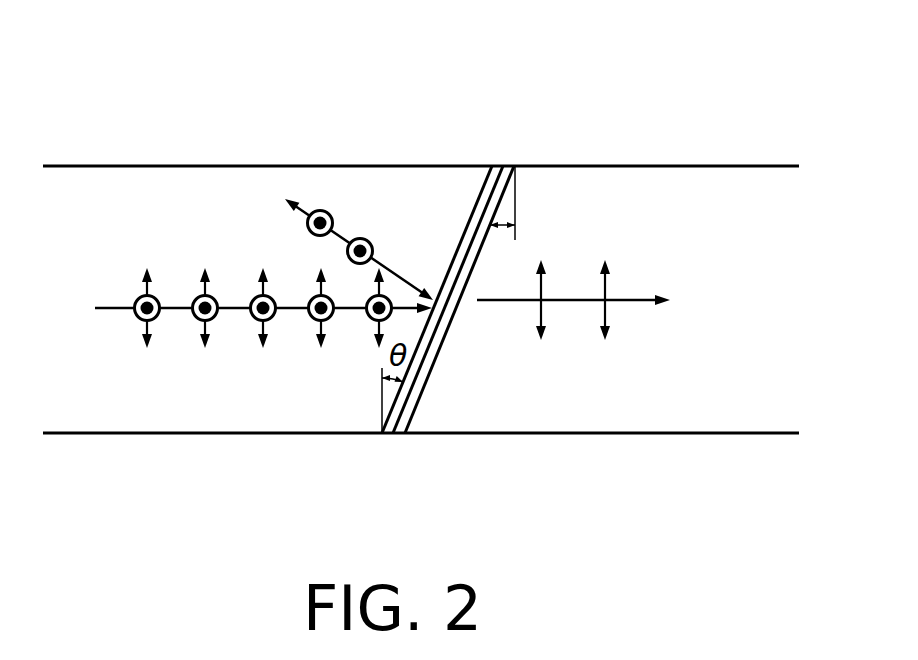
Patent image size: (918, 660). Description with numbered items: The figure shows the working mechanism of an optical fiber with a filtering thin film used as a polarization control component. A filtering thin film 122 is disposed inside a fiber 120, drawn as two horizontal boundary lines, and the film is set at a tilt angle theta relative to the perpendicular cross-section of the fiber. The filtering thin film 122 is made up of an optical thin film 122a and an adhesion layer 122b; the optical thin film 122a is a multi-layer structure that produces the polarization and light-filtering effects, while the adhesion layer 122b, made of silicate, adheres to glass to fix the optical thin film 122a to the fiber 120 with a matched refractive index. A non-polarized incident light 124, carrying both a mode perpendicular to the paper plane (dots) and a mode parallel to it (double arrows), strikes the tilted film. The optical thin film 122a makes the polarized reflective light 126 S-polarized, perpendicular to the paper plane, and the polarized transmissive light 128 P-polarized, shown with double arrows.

The fiber 120 is at (790, 495).
The filtering thin film 122 is at (491, 226).
The optical thin film 122a is at (497, 166).
The adhesion layer 122b is at (513, 166).
The non-polarized incident light 124 is at (117, 310).
The polarized reflective light 126 is at (398, 277).
The polarized transmissive light 128 is at (632, 298).